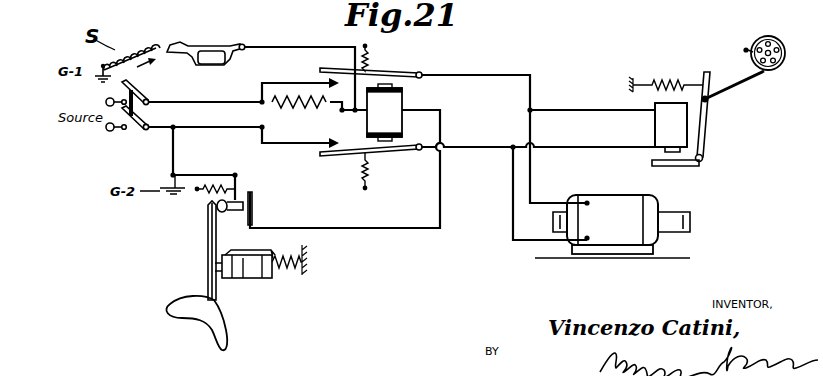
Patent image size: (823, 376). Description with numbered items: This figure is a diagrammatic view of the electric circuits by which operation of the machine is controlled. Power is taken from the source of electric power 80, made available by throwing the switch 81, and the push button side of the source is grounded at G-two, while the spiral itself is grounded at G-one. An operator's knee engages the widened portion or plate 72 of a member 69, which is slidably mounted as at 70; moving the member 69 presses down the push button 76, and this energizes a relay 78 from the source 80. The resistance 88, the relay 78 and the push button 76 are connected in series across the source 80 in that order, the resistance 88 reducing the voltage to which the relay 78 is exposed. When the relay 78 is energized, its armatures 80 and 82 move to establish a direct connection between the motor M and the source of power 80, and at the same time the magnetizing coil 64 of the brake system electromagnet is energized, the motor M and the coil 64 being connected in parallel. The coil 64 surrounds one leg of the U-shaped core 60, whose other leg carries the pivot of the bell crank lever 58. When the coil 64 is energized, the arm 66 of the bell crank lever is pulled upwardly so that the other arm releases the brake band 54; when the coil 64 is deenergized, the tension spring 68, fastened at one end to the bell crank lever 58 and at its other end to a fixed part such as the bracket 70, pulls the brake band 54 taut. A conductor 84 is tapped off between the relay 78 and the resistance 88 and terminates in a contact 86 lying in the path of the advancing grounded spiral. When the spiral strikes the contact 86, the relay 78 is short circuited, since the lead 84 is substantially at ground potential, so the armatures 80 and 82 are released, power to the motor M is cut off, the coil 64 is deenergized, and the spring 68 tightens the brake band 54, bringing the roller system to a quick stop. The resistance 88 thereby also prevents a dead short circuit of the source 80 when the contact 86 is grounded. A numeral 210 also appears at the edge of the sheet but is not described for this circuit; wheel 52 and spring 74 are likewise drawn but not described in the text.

The pulley 52 is at (749, 59).
The brake band 54 is at (779, 72).
The bell crank lever 58 is at (705, 145).
The U-shaped core 60 is at (666, 151).
The magnetizing coil 64 is at (660, 124).
The arm of the bell crank lever 66 is at (669, 167).
The tension spring 68 is at (666, 83).
The member 69 is at (222, 272).
The bracket 70 is at (254, 270).
The widened portion or plate 72 is at (202, 320).
The spring 74 is at (282, 262).
The push button 76 is at (224, 221).
The relay 78 is at (409, 104).
The source of electric power 80 is at (108, 132).
The switch 81 is at (144, 130).
The armature 82 is at (384, 70).
The conductor 84 is at (294, 46).
The contact 86 is at (182, 45).
The resistance 88 is at (285, 88).
The reference from adjacent figure 210 is at (500, 0).
The motor M is at (692, 233).